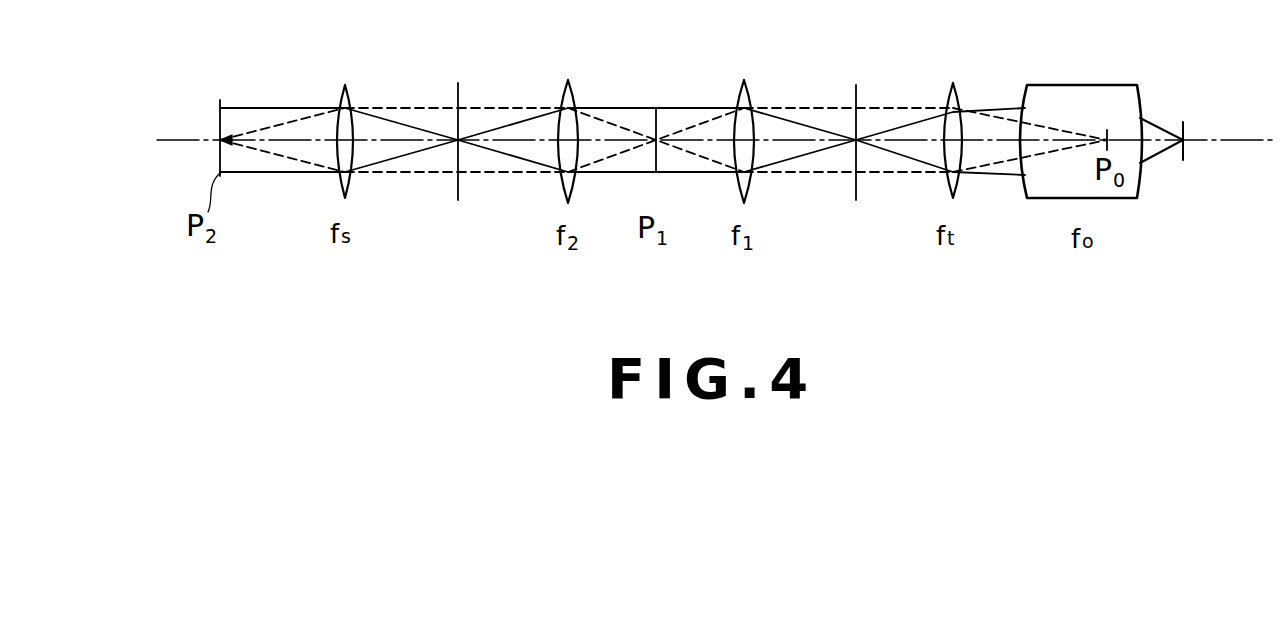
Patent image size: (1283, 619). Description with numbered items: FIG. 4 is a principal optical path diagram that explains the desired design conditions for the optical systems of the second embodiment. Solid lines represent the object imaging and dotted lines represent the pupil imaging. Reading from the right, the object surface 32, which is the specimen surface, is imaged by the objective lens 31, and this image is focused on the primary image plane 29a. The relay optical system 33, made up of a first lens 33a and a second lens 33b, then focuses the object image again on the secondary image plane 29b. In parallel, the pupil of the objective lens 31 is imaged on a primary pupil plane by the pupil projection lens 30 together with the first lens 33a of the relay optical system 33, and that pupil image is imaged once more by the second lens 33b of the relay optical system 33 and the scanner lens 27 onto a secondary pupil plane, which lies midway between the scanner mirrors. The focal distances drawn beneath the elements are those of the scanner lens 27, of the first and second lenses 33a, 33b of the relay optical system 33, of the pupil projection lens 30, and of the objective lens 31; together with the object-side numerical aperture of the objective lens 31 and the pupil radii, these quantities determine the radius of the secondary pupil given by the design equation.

The scanner lens 27 is at (344, 85).
The primary image plane 29a is at (863, 171).
The secondary image plane 29b is at (471, 169).
The pupil projection lens 30 is at (955, 83).
The objective lens 31 is at (1100, 85).
The object surface 32 is at (1185, 122).
The relay optical system 33 is at (745, 53).
The first lens of the relay optical system 33a is at (747, 80).
The second lens of the relay optical system 33b is at (566, 81).